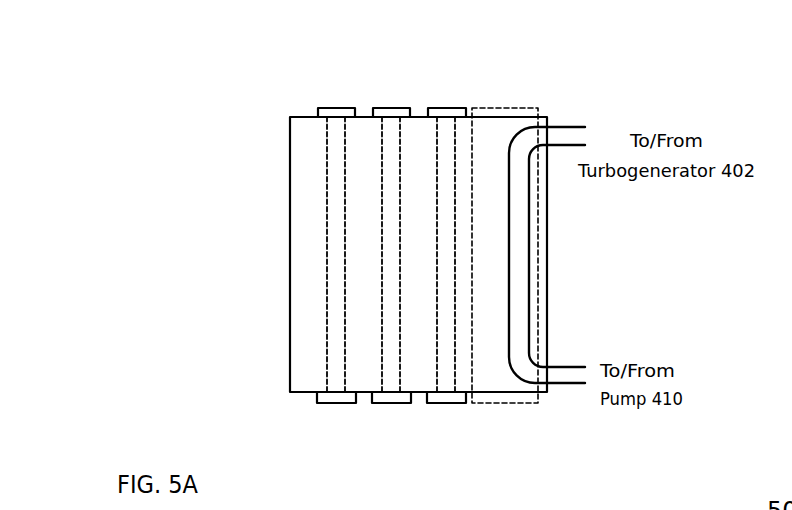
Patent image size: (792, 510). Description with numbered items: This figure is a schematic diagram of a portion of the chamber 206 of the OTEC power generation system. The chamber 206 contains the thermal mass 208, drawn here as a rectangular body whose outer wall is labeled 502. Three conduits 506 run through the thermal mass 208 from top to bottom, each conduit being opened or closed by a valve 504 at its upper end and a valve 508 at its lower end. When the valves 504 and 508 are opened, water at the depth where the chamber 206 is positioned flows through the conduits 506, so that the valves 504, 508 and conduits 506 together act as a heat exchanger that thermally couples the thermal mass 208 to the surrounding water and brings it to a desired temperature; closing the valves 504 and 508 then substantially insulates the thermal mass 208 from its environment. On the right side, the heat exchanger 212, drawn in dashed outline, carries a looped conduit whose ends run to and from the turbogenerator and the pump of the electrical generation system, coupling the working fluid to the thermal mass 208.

The chamber 206 is at (213, 56).
The thermal mass 208 is at (308, 357).
The heat exchanger 212 is at (510, 109).
The housing 502 is at (290, 275).
The valves 504 is at (445, 108).
The conduits 506 is at (447, 209).
The valves 508 is at (443, 403).